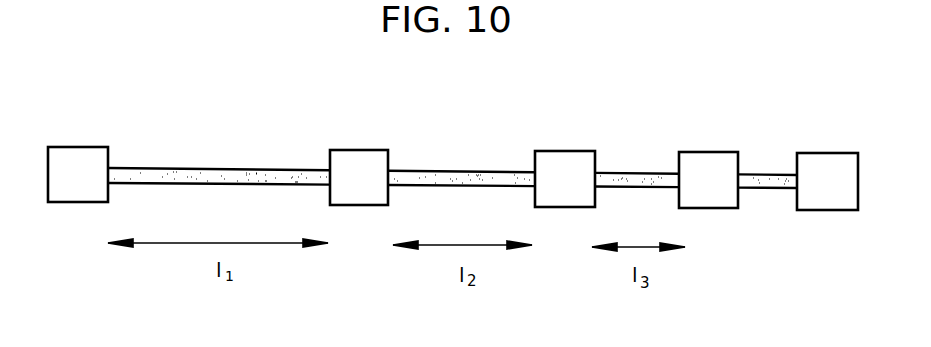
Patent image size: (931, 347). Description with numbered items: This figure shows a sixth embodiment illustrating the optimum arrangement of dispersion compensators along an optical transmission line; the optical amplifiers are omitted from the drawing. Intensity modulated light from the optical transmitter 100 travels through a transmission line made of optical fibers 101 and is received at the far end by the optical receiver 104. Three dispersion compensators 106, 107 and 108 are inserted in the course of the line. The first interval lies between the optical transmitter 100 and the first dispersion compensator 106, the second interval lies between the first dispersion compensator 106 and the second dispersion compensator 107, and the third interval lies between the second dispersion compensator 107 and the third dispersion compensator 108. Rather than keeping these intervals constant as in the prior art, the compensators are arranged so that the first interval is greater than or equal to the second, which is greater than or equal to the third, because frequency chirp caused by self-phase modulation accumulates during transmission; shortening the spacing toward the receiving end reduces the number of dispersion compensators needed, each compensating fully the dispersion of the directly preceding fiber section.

The optical transmitter 100 is at (77, 152).
The optical fibers 101 is at (225, 177).
The dispersion compensator 106 is at (360, 152).
The dispersion compensator 107 is at (565, 154).
The dispersion compensator 108 is at (707, 157).
The optical receiver 104 is at (828, 156).